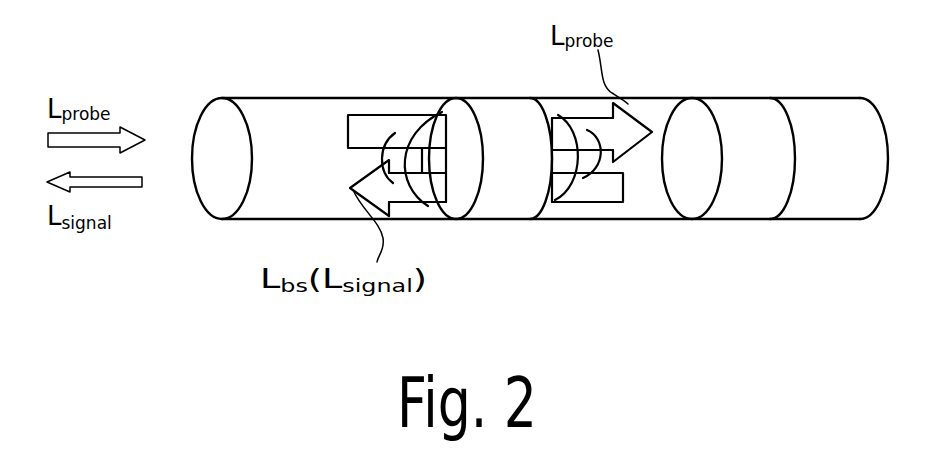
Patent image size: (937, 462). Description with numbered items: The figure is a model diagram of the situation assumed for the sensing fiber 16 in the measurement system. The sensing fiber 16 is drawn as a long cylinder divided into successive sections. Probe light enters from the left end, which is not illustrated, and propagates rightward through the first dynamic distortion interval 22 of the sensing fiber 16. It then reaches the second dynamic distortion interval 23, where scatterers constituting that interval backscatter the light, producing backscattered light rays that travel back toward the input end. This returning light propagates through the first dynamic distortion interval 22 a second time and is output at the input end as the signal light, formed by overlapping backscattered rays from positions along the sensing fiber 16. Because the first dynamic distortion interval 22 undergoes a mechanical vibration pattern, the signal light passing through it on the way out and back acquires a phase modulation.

The sensing fiber 16 is at (229, 127).
The first dynamic distortion interval 22 is at (490, 130).
The second dynamic distortion interval 23 is at (735, 133).